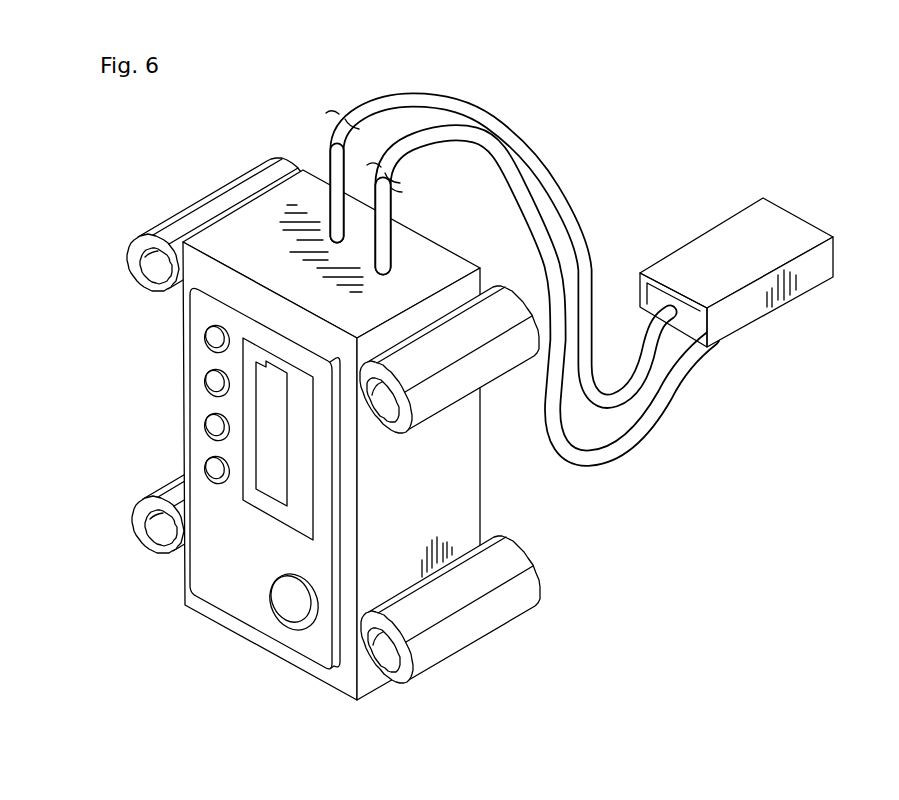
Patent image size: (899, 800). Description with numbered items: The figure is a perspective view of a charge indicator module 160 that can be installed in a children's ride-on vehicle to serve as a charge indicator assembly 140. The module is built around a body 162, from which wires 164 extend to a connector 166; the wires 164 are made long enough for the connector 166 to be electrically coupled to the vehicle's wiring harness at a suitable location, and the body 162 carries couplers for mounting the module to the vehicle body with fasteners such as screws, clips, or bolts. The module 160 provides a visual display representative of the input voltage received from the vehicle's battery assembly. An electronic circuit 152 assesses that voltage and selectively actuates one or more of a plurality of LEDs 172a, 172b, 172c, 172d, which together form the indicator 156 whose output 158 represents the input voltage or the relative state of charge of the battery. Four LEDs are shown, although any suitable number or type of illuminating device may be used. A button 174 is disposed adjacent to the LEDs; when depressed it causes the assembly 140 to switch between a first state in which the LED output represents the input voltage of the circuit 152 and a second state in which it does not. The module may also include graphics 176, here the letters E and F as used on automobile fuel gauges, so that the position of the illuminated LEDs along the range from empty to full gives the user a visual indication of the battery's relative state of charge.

The charge indicator assembly 140 is at (484, 76).
The electronic circuit 152 is at (486, 506).
The indicator 156 is at (204, 500).
The output 158 is at (226, 495).
The charge indicator module 160 is at (540, 132).
The body 162 is at (472, 452).
The wires 164 is at (331, 148).
The connector 166 is at (735, 228).
The LED 172a is at (208, 467).
The LED 172b is at (207, 430).
The LED 172c is at (207, 388).
The LED 172d is at (208, 346).
The button 174 is at (290, 613).
The graphics 176 is at (270, 387).